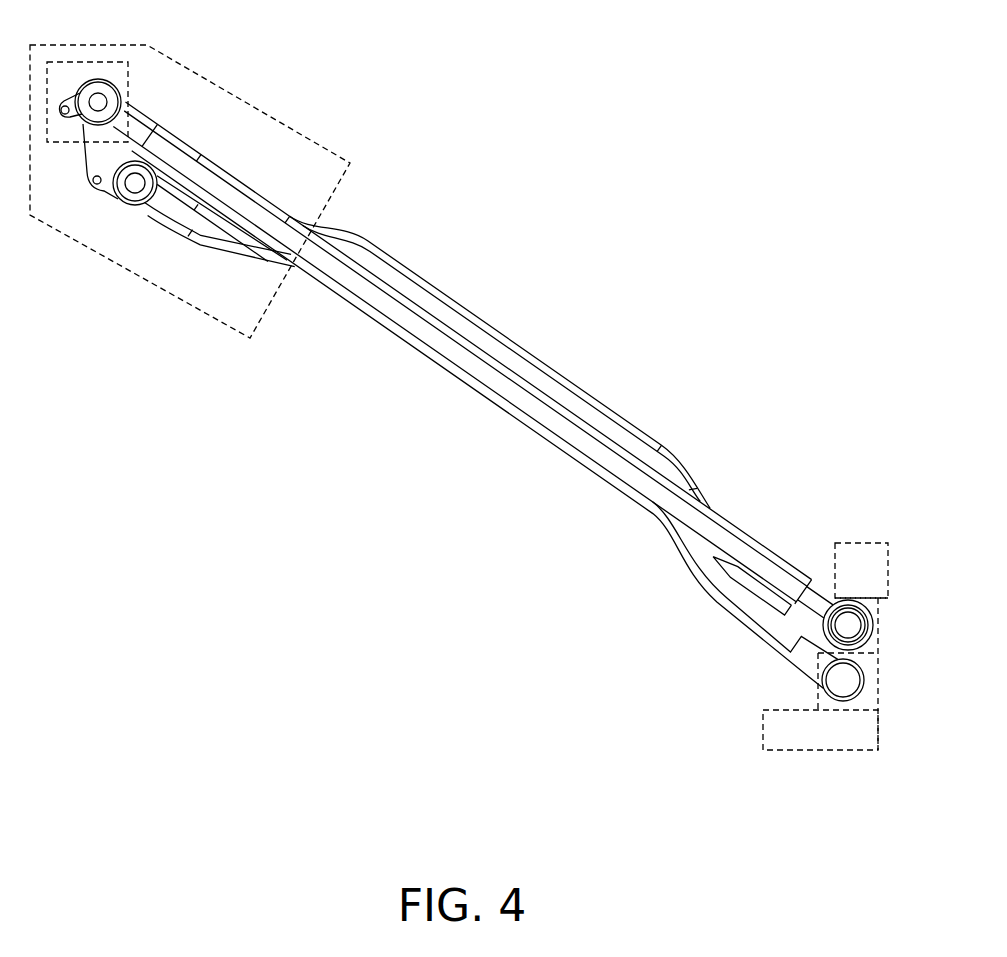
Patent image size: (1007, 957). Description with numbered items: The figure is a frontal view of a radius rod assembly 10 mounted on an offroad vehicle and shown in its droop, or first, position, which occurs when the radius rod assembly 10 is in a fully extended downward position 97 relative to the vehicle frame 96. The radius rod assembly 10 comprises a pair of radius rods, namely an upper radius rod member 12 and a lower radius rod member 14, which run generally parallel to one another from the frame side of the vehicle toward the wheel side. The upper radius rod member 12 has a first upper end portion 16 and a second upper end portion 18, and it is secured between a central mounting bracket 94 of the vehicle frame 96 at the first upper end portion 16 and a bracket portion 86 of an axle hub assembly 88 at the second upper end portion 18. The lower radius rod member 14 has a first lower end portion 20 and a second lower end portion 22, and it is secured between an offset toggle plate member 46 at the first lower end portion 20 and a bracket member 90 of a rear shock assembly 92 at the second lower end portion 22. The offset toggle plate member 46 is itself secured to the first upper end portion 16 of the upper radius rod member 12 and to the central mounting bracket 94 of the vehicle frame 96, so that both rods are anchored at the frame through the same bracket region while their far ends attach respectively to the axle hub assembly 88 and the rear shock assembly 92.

The radius rod assembly 10 is at (516, 314).
The upper radius rod member 12 is at (239, 168).
The lower radius rod member 14 is at (678, 599).
The first upper end portion 16 is at (129, 92).
The second upper end portion 18 is at (880, 635).
The first lower end portion 20 is at (134, 218).
The second lower end portion 22 is at (814, 699).
The offset toggle plate member 46 is at (83, 191).
The bracket portion 86 is at (891, 619).
The axle hub assembly 88 is at (877, 531).
The bracket member 90 is at (889, 696).
The rear shock assembly 92 is at (823, 759).
The central mounting bracket 94 is at (139, 75).
The vehicle frame 96 is at (220, 81).
The fully extended downward position 97 is at (499, 490).